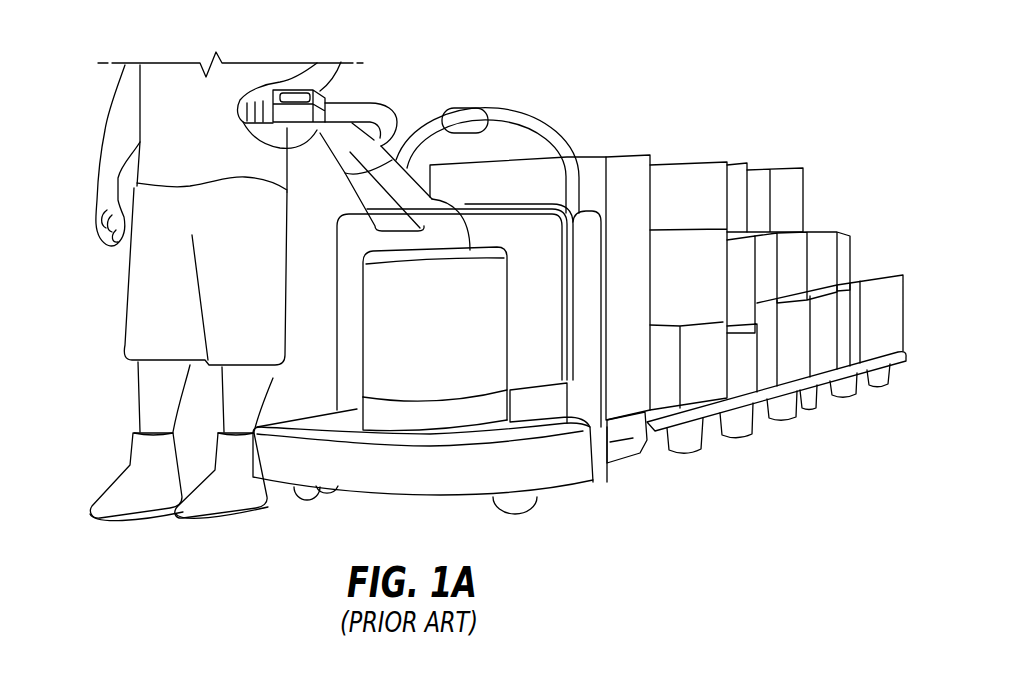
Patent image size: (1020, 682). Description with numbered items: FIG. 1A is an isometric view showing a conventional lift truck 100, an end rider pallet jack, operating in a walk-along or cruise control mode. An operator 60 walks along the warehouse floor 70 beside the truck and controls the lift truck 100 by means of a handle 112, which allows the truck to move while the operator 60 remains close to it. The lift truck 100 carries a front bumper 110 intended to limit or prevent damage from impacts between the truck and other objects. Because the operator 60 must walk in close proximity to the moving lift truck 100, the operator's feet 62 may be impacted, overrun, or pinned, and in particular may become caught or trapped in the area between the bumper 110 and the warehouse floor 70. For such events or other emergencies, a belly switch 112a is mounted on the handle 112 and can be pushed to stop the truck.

The operator 60 is at (188, 314).
The operator's feet 62 is at (236, 520).
The warehouse floor 70 is at (825, 474).
The lift truck 100 is at (631, 431).
The front bumper 110 is at (468, 281).
The handle 112 is at (364, 73).
The belly switch 112a is at (299, 94).